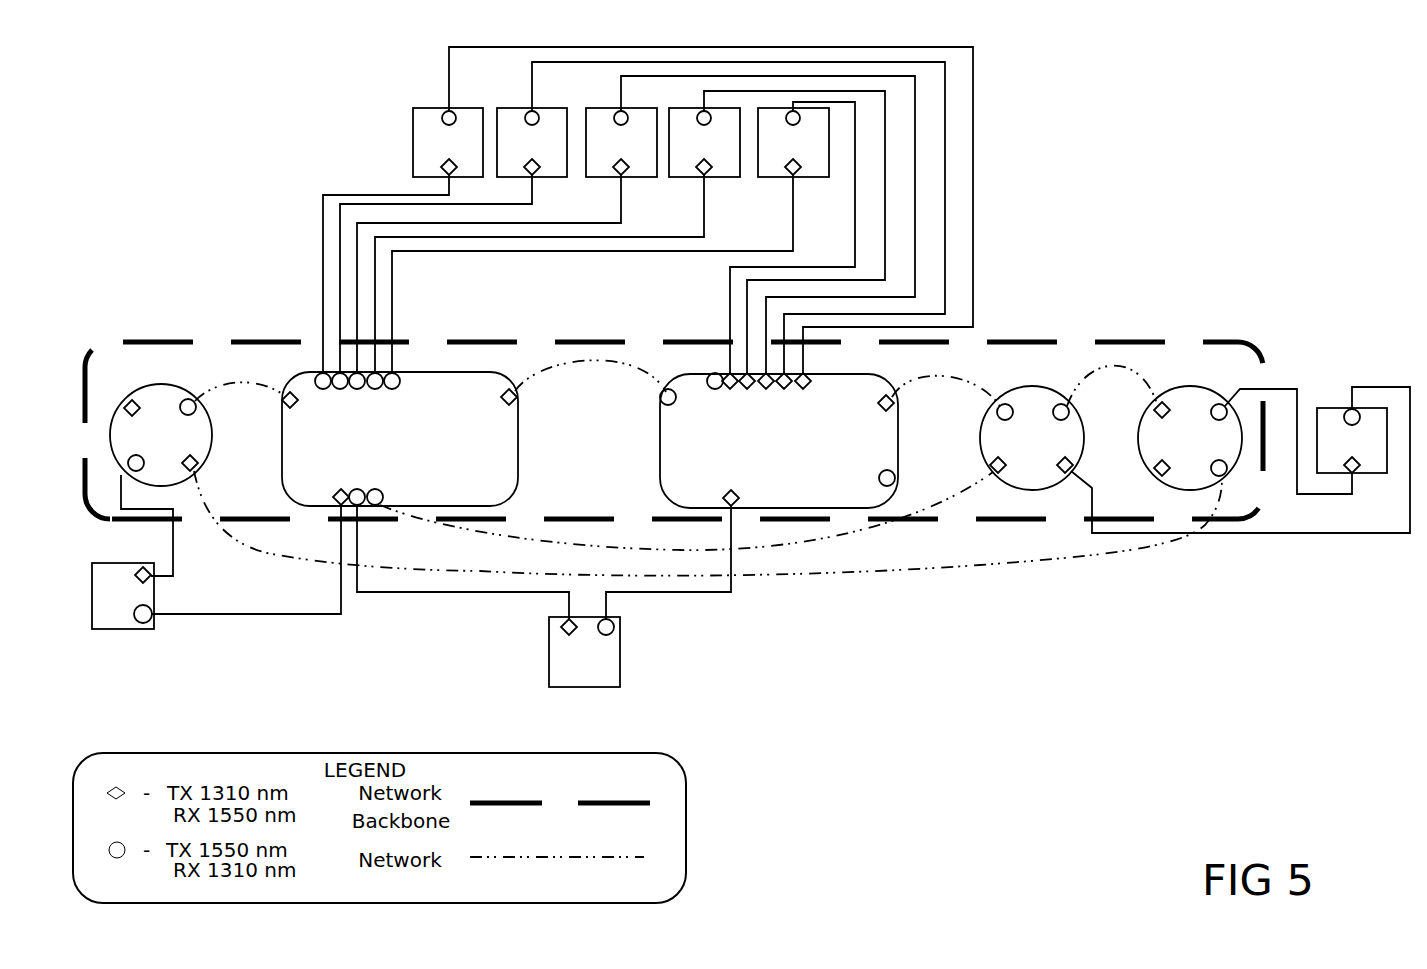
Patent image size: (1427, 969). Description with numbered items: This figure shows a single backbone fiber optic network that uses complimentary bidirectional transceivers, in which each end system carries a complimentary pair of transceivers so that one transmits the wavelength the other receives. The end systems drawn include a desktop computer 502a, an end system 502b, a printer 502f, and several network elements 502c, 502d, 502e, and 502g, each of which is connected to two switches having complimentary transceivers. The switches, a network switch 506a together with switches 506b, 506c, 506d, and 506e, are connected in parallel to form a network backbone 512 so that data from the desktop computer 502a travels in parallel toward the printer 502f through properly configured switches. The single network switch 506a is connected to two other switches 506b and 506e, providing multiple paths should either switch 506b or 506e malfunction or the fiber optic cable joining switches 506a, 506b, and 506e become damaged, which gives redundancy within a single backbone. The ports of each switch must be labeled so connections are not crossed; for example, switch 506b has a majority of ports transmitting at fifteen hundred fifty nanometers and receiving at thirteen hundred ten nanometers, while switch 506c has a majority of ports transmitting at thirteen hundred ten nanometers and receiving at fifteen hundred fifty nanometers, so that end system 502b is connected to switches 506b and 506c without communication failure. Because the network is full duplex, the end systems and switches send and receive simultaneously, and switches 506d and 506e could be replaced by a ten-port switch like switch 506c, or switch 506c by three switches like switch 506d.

The desktop computer 502a is at (123, 596).
The end system 502b is at (584, 652).
The network element 502c is at (448, 142).
The network element 502d is at (532, 142).
The network element 502e is at (621, 142).
The printer 502f is at (1028, 290).
The network element 502g is at (793, 142).
The network switch 506a is at (161, 435).
The switch 506b is at (400, 439).
The switch 506c is at (779, 440).
The switch 506d is at (1032, 438).
The switch 506e is at (1190, 438).
The network backbone 512 is at (181, 322).